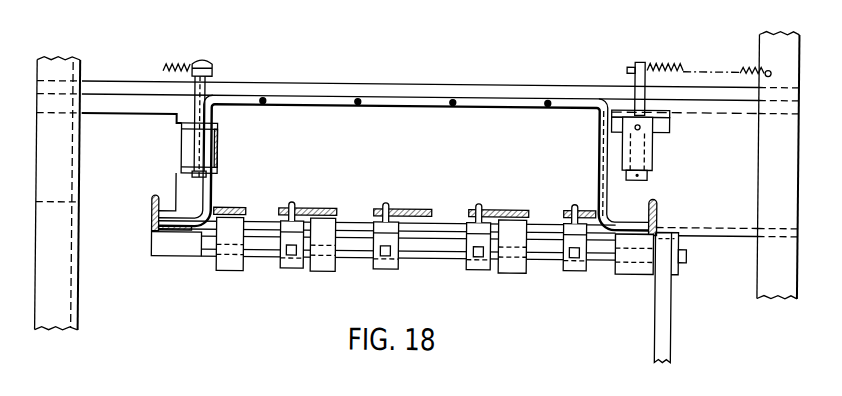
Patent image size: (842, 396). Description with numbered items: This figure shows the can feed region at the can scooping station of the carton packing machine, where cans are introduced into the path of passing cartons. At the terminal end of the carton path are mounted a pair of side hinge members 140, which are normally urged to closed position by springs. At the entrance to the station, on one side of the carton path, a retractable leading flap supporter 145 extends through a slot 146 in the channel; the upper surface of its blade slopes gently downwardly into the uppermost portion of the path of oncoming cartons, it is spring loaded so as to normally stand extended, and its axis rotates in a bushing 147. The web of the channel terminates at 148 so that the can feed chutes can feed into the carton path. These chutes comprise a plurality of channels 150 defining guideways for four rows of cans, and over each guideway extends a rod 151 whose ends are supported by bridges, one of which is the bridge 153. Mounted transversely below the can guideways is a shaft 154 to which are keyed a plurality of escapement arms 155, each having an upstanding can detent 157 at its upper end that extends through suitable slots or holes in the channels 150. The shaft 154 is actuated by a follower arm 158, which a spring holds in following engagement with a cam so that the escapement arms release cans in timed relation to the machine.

The side hinge members 140 is at (188, 147).
The retractable leading flap supporter 145 is at (657, 110).
The slot 146 is at (664, 124).
The bushing 147 is at (651, 153).
The termination of channel web 148 is at (599, 188).
The channels 150 is at (229, 206).
The rod 151 is at (263, 102).
The bridge 153 is at (398, 104).
The shaft 154 is at (413, 261).
The escapement arms 155 is at (478, 264).
The can detent 157 is at (374, 204).
The follower arm 158 is at (663, 318).